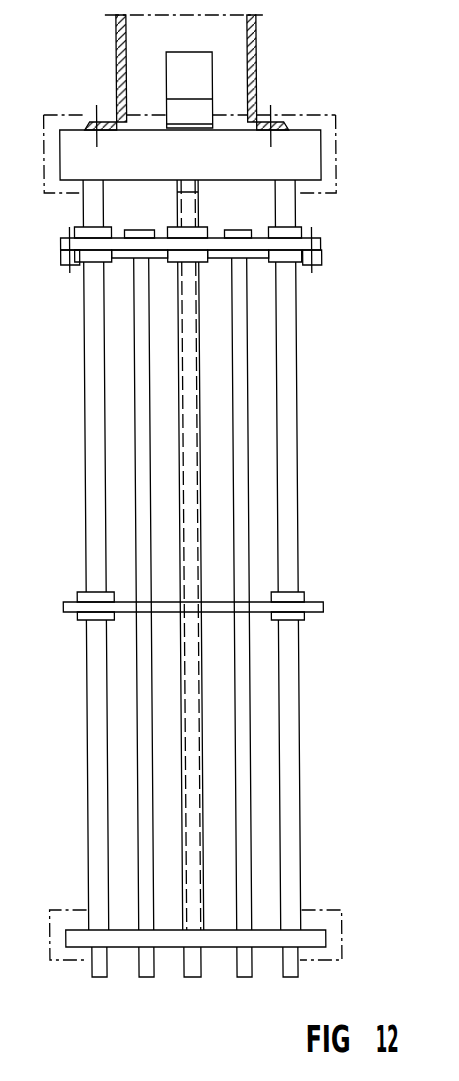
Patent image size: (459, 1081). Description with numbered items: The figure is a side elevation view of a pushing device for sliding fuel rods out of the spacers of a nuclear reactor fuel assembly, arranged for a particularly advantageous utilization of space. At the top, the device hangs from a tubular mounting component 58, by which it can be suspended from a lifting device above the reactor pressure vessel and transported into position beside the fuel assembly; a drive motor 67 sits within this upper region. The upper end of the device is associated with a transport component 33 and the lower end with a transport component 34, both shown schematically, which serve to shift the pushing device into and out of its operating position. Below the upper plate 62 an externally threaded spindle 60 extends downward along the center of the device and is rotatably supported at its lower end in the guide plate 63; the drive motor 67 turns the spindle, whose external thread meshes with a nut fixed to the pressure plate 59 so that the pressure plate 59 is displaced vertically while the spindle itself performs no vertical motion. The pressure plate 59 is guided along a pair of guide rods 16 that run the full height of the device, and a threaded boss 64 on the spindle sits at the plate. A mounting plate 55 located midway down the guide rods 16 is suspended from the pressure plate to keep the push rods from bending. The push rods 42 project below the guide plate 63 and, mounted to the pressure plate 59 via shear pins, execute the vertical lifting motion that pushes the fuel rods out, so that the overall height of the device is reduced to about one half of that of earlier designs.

The tubular mounting component 58 is at (118, 44).
The drive motor 67 is at (202, 60).
The transport component 33 is at (337, 168).
The upper plate 62 is at (70, 147).
The guide rods 16 is at (95, 733).
The externally threaded spindle 60 is at (186, 212).
The boss 64 is at (202, 232).
The pressure plate 59 is at (303, 246).
The mounting plate 55 is at (317, 605).
The transport component 34 is at (52, 910).
The guide plate 63 is at (66, 939).
The push rods 42 is at (95, 970).